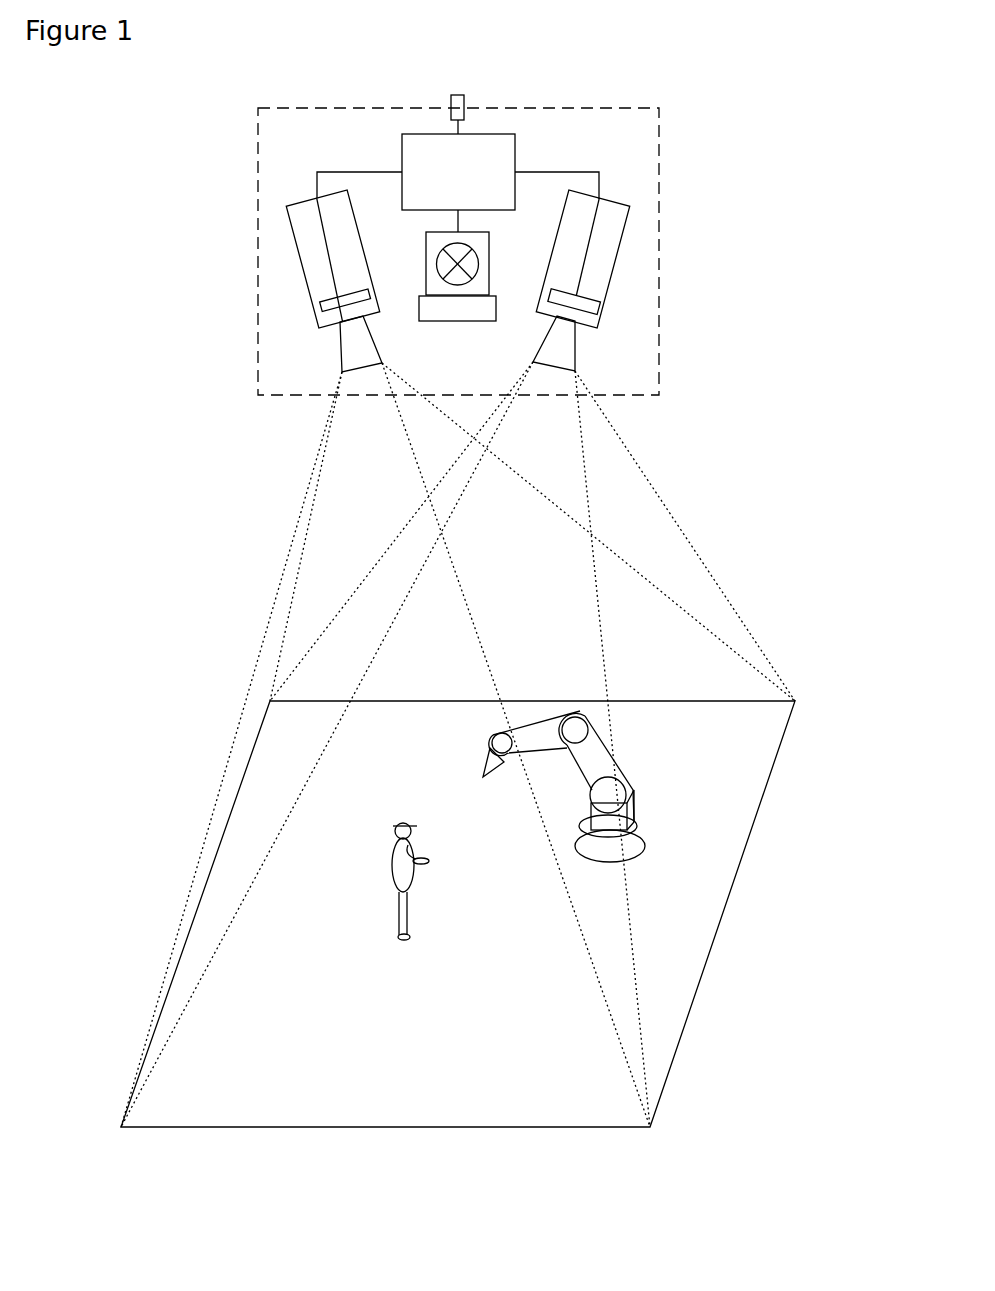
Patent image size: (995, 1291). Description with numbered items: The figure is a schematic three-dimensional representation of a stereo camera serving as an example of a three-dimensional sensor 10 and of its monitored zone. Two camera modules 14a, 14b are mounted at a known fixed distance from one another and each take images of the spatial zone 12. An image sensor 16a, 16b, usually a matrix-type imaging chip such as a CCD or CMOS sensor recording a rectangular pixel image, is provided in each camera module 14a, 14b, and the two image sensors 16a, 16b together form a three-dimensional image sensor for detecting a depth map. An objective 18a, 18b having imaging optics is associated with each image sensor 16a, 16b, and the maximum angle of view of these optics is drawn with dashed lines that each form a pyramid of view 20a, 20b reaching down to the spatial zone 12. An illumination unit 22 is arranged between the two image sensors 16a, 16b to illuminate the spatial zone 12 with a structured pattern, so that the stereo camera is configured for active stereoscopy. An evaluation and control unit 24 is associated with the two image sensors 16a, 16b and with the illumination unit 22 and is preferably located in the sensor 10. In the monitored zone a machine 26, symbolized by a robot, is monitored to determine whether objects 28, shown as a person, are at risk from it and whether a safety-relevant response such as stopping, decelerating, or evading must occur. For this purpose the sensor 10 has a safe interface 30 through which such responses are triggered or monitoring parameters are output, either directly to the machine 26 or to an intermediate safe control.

The 3D sensor 10 is at (491, 221).
The spatial zone 12 is at (497, 837).
The camera module 14a is at (269, 259).
The camera module 14b is at (644, 259).
The image sensor 16a is at (274, 311).
The image sensor 16b is at (643, 322).
The objective 18a is at (285, 377).
The objective 18b is at (631, 388).
The pyramid of view 20a is at (458, 745).
The pyramid of view 20b is at (462, 744).
The illumination unit 22 is at (480, 269).
The evaluation and control unit 24 is at (458, 145).
The machine 26 is at (602, 786).
The object 28 is at (396, 924).
The safe interface 30 is at (485, 89).